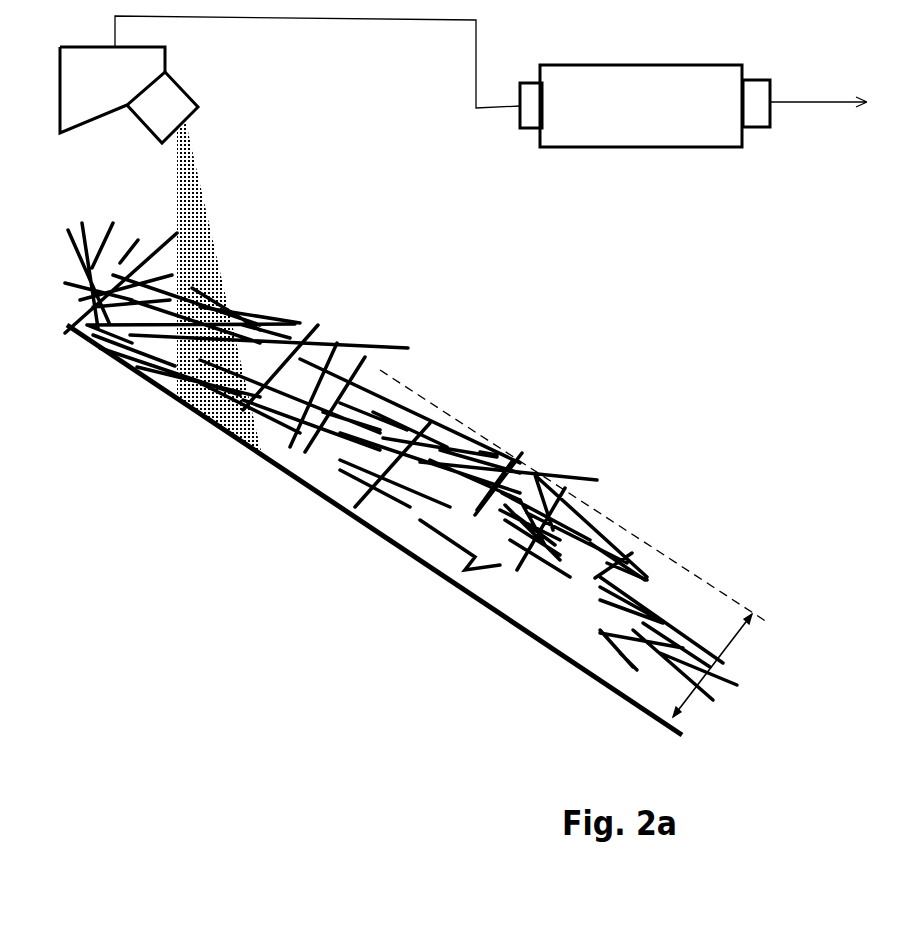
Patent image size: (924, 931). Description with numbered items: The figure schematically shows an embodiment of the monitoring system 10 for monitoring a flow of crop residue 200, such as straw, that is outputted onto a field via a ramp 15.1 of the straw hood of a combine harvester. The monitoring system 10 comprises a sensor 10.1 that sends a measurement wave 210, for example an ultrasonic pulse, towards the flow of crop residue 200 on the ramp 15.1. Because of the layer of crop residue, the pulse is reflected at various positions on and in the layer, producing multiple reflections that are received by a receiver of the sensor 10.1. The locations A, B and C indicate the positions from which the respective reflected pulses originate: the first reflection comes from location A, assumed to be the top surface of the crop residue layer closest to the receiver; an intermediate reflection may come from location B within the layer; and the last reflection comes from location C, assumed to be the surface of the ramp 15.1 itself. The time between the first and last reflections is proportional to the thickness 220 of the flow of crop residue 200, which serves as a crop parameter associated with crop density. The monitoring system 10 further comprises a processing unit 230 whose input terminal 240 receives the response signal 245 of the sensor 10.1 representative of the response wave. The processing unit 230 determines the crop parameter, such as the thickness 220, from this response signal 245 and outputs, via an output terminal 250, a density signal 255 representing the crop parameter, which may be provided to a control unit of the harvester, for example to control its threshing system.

The monitoring system 10 is at (211, 113).
The sensor 10.1 is at (173, 105).
The measurement wave 210 is at (193, 213).
The location of reflected pulse A is at (200, 290).
The location of reflected pulse B is at (142, 378).
The location of reflected pulse C is at (213, 423).
The ramp 15.1 is at (298, 482).
The flow of crop residue 200 is at (500, 540).
The thickness of the flow of crop residue 220 is at (733, 645).
The processing unit 230 is at (648, 118).
The input terminal 240 is at (532, 110).
The output terminal 250 is at (760, 112).
The density signal 255 is at (823, 102).
The response signal 245 is at (476, 25).